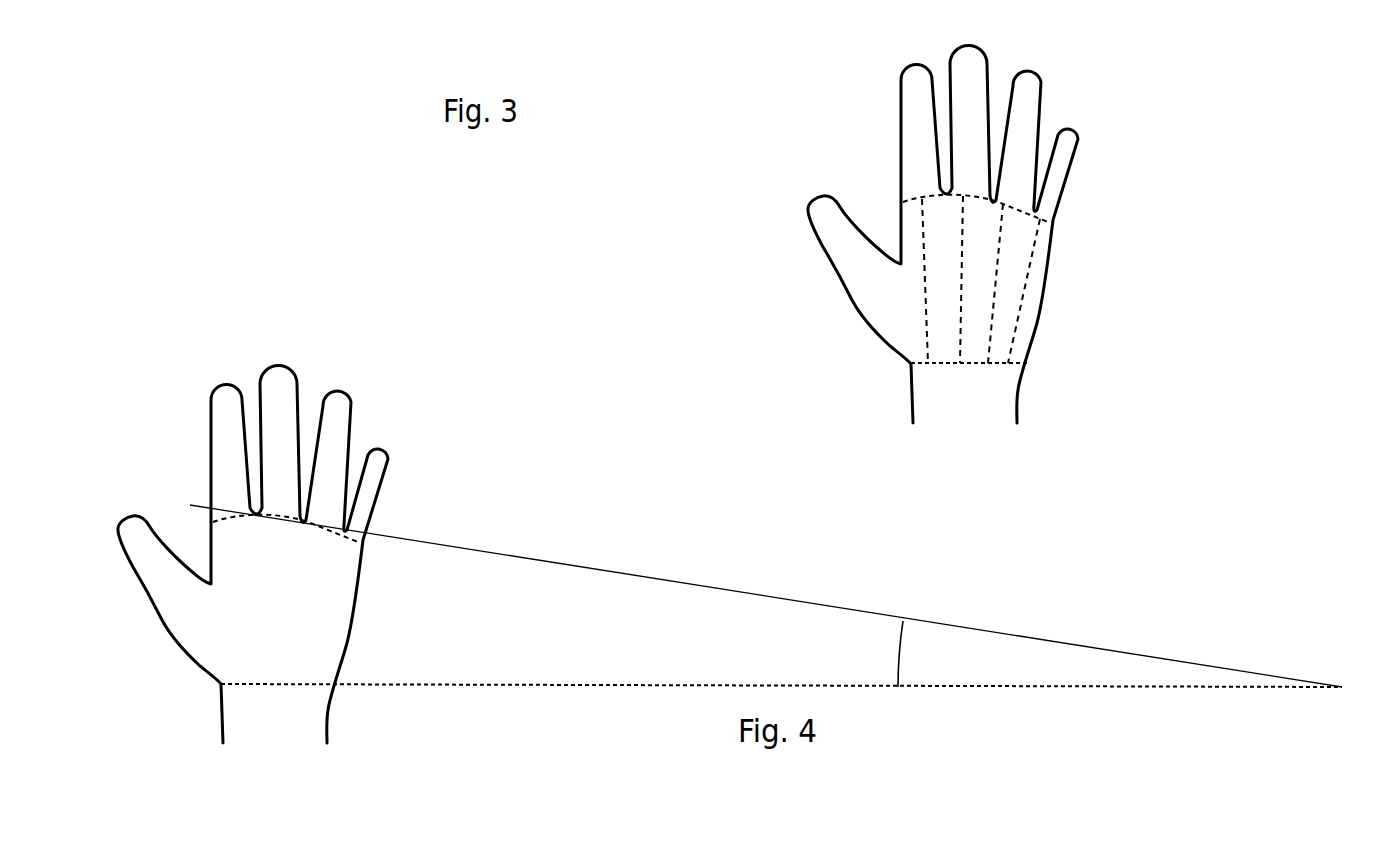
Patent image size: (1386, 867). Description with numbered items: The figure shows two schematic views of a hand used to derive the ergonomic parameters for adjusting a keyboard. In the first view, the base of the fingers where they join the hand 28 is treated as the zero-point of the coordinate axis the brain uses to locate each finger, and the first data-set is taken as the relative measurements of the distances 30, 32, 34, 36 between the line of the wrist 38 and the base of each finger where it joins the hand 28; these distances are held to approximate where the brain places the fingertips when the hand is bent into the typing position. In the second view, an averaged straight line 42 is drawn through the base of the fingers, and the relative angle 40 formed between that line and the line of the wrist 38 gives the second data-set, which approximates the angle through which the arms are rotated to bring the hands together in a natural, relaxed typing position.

In FIG. 3, the base of the fingers where they join the hand 28 is at (1038, 213).
In FIG. 4, the base of the fingers where they join the hand 28 is at (307, 448).
In FIG. 3, the distance between the line of the wrist and the base of a finger 30 is at (927, 271).
In FIG. 3, the distance between the line of the wrist and the base of a finger 32 is at (963, 297).
In FIG. 3, the distance between the line of the wrist and the base of a finger 34 is at (993, 326).
In FIG. 3, the distance between the line of the wrist and the base of a finger 36 is at (1010, 353).
In FIG. 3, the line of the wrist 38 is at (915, 365).
In FIG. 4, the line of the wrist 38 is at (620, 683).
In FIG. 4, the relative angle 40 is at (892, 651).
In FIG. 4, the averaged straight line drawn through the base of the fingers 42 is at (468, 547).